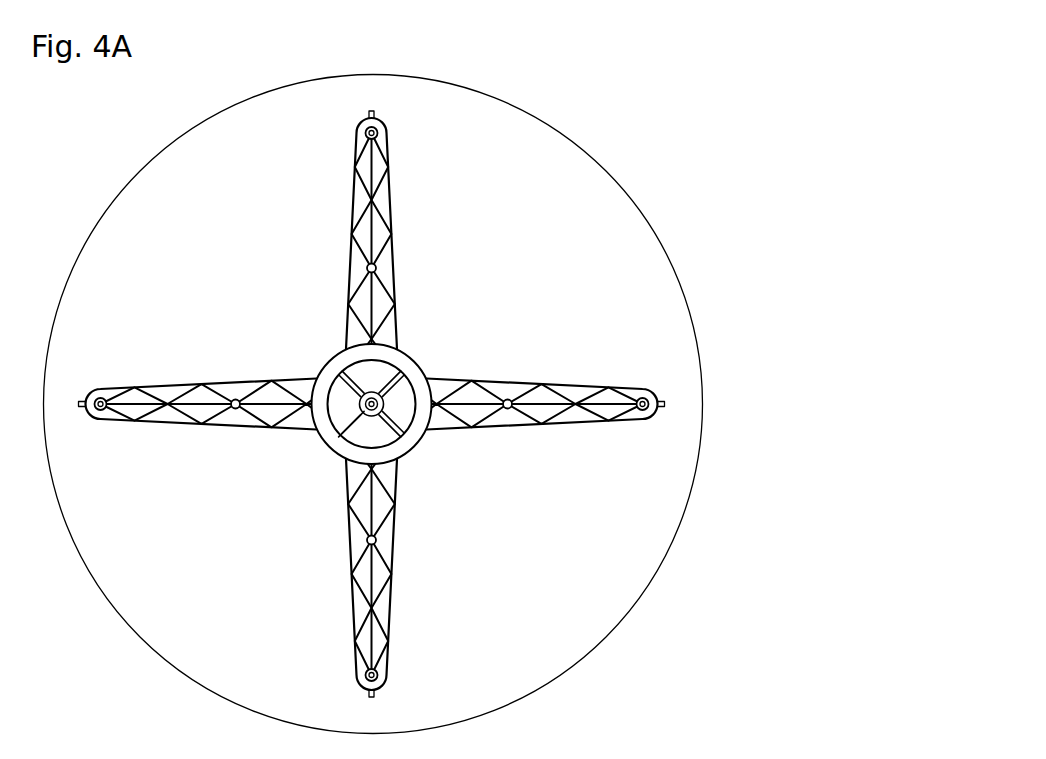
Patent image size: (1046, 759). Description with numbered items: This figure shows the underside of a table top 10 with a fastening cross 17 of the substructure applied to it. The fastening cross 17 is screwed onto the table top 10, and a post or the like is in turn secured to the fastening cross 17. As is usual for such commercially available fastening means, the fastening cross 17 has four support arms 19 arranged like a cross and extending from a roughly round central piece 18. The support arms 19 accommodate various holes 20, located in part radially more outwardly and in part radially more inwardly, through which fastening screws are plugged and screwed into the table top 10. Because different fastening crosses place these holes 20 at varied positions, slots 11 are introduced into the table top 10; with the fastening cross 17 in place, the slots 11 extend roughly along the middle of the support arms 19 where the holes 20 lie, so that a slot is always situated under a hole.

The table top 10 is at (425, 99).
The slots 11 is at (376, 113).
The fastening cross 17 is at (398, 347).
The central piece 18 is at (417, 377).
The support arms 19 is at (549, 393).
The holes 20 is at (647, 397).